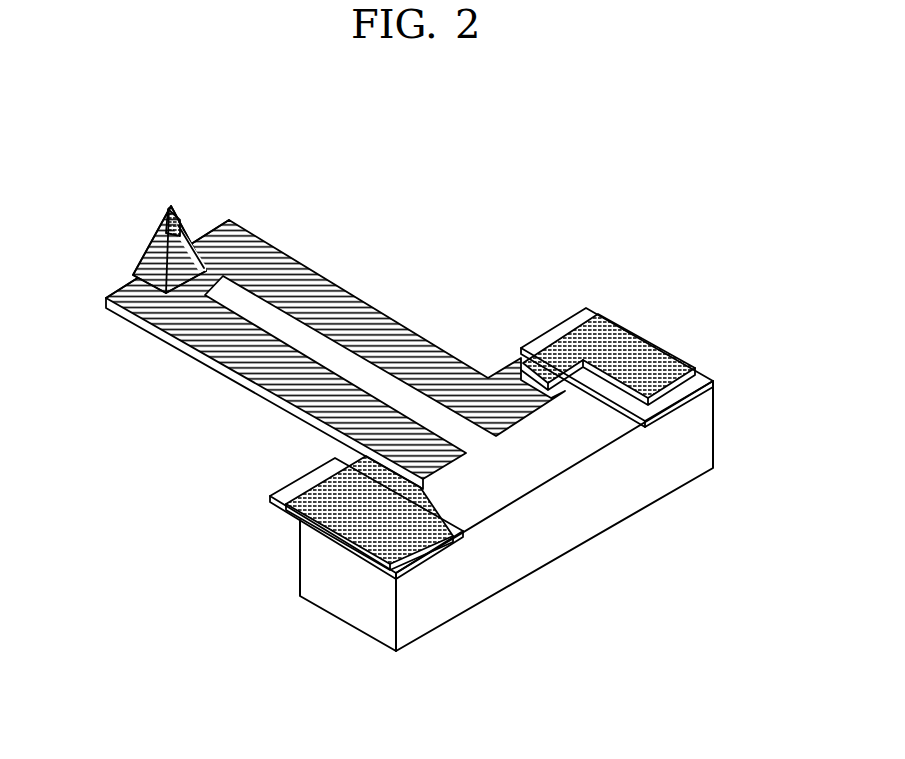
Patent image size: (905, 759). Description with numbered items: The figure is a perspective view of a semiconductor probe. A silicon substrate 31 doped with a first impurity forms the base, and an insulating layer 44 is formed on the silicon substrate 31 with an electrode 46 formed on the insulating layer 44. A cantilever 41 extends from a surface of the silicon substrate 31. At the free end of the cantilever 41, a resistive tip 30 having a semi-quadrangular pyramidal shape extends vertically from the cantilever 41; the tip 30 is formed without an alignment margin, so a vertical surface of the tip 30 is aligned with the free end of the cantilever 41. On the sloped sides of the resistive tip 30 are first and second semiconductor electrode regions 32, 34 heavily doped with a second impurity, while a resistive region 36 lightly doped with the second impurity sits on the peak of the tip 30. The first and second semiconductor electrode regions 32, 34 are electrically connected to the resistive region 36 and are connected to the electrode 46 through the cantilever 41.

The resistive tip 30 is at (197, 217).
The silicon substrate 31 is at (680, 445).
The first semiconductor electrode region 32 is at (243, 247).
The second semiconductor electrode region 34 is at (122, 272).
The resistive region 36 is at (173, 197).
The cantilever 41 is at (152, 323).
The insulating layer 44 is at (406, 544).
The electrode 46 is at (620, 331).